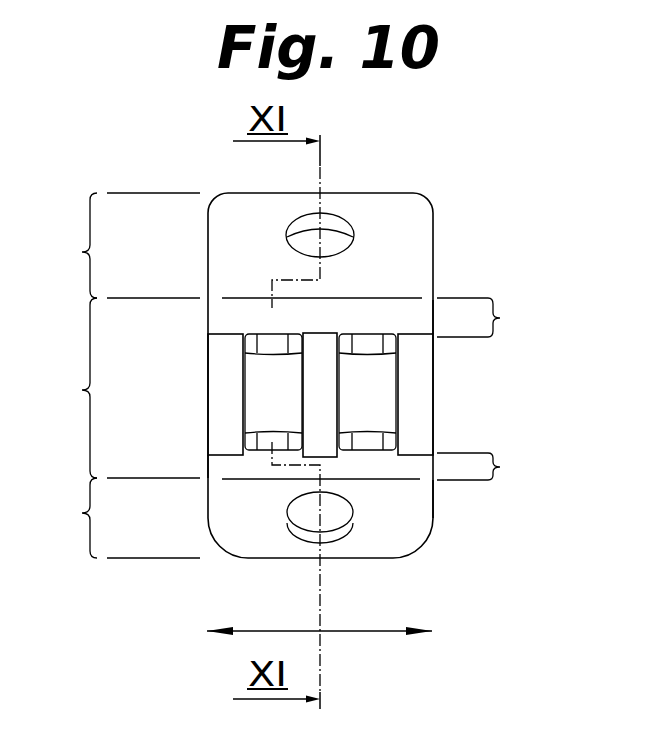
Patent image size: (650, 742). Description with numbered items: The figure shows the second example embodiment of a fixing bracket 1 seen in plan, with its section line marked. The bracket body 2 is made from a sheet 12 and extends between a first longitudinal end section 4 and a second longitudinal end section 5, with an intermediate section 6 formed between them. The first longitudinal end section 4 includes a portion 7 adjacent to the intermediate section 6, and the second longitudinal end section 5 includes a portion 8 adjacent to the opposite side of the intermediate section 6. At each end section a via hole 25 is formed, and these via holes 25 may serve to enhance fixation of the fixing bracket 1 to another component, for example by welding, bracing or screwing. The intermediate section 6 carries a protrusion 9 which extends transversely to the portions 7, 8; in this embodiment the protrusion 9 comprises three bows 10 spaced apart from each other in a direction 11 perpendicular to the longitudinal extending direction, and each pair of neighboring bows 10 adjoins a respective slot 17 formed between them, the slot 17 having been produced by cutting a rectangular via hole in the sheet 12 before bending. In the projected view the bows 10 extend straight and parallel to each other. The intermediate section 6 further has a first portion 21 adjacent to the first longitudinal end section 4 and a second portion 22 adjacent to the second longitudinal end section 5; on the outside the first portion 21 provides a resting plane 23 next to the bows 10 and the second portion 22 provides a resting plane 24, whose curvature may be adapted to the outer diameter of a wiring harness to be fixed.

The fixing bracket 1 is at (456, 176).
The bracket body 2 is at (340, 205).
The first longitudinal end section 4 is at (82, 252).
The second longitudinal end section 5 is at (82, 513).
The intermediate section 6 is at (82, 390).
The portion 7 is at (243, 293).
The portion 8 is at (240, 488).
The protrusion 9 is at (310, 402).
The bows 10 is at (310, 378).
The direction 11 is at (320, 631).
The sheet 12 is at (415, 508).
The slot 17 is at (257, 411).
The first portion 21 is at (503, 318).
The second portion 22 is at (503, 467).
The resting plane 23 is at (413, 315).
The resting plane 24 is at (223, 462).
The via hole 25 is at (340, 238).